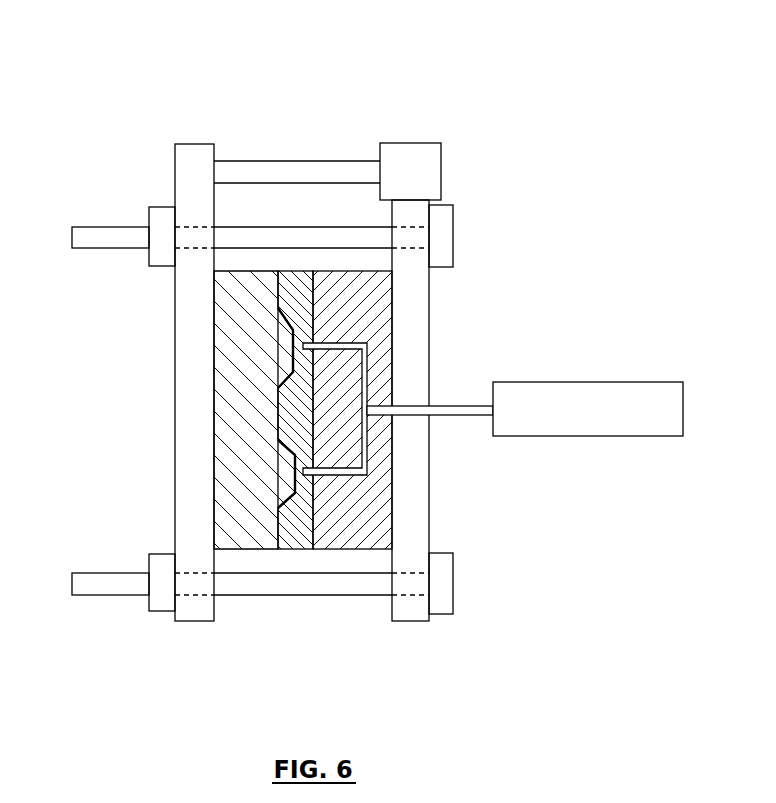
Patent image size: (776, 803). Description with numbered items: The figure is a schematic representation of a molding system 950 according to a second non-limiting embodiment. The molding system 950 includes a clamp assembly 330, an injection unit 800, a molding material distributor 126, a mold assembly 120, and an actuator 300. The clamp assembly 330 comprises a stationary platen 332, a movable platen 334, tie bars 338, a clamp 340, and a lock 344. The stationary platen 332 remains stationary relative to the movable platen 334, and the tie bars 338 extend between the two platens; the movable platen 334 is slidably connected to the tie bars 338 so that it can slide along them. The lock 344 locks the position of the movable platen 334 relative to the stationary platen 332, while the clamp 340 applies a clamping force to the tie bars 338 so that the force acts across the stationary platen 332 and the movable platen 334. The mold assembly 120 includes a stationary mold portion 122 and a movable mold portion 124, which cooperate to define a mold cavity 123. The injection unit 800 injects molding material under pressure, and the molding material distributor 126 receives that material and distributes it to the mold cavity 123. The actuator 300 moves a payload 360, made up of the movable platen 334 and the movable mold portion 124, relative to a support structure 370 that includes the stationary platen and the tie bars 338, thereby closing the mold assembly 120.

The mold assembly 120 is at (270, 250).
The stationary mold portion 122 is at (297, 283).
The mold cavity 123 is at (296, 503).
The movable mold portion 124 is at (247, 288).
The molding material distributor 126 is at (366, 316).
The actuator 300 is at (381, 116).
The clamp assembly 330 is at (517, 680).
The stationary platen 332 is at (408, 621).
The movable platen 334 is at (195, 621).
The tie bars 338 is at (297, 595).
The clamp 340 is at (440, 614).
The lock 344 is at (165, 611).
The payload 360 is at (187, 100).
The support structure 370 is at (486, 218).
The injection unit 800 is at (693, 350).
The molding system 950 is at (668, 108).